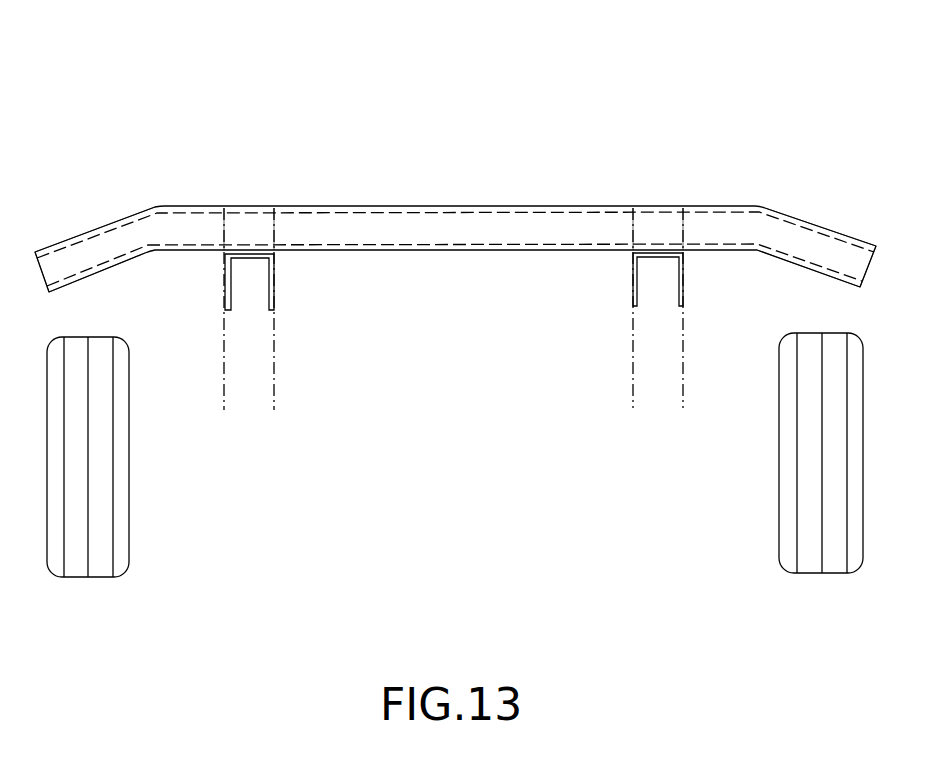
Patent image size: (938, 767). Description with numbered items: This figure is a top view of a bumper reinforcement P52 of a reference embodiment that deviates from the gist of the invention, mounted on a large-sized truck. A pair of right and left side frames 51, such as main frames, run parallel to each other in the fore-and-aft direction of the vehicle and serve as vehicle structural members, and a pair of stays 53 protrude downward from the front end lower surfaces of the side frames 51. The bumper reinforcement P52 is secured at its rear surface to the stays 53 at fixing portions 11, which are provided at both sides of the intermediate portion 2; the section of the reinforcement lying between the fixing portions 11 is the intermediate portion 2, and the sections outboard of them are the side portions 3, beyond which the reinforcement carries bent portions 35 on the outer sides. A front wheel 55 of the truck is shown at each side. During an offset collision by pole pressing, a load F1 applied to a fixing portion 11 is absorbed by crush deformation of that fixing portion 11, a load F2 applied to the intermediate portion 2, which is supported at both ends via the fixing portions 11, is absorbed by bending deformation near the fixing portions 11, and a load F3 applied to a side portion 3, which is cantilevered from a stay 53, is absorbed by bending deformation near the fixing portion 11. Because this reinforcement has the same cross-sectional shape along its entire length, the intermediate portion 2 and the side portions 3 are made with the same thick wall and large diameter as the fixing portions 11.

The bumper reinforcement P52 is at (448, 201).
The intermediate portion 2 is at (450, 229).
The side portion 3 is at (150, 255).
The bent portion 35 is at (52, 265).
The fixing portion 11 is at (265, 234).
The side frame 51 is at (275, 365).
The stay 53 is at (228, 280).
The front wheel 55 is at (120, 532).
The load applied to the fixing portion F1 is at (251, 200).
The load applied to the intermediate portion F2 is at (453, 198).
The load applied to the side portion F3 is at (83, 218).